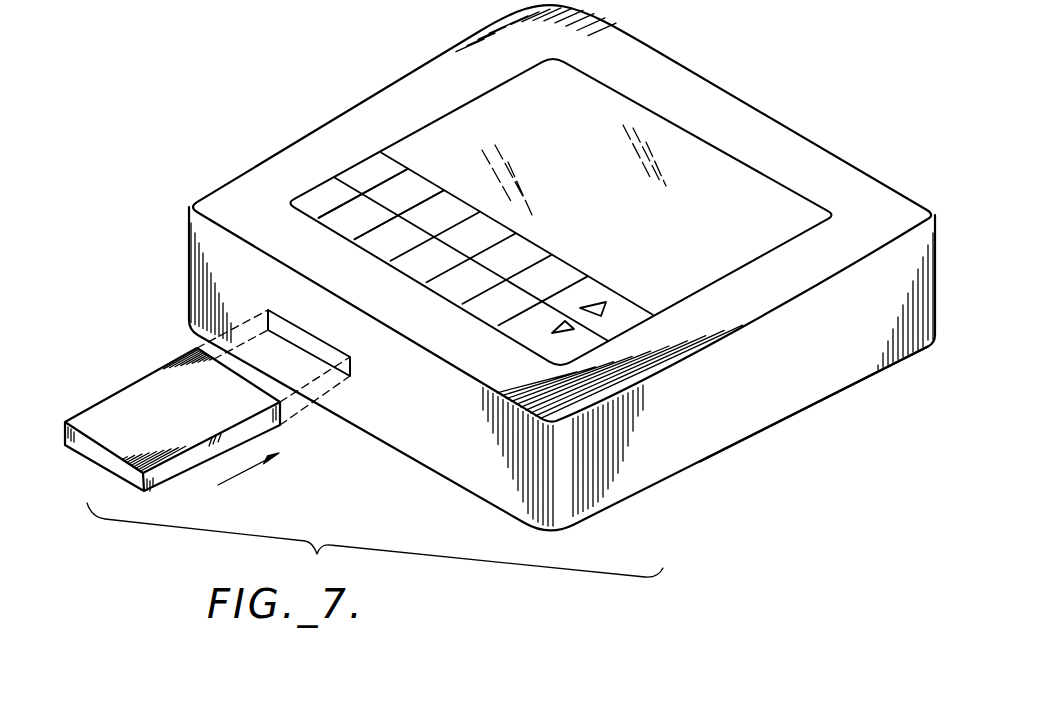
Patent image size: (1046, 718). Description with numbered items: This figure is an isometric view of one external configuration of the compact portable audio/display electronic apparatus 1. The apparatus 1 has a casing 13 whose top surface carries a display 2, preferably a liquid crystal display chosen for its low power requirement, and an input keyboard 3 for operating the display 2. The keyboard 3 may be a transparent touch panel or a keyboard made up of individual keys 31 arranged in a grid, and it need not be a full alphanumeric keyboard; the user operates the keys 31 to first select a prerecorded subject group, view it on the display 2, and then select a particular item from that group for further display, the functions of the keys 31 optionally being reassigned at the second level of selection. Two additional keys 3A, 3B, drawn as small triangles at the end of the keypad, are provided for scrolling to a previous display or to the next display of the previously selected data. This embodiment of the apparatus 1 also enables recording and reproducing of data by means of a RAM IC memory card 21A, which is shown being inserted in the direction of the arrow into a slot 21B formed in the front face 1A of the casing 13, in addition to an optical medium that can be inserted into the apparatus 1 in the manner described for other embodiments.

The compact portable audio/display electronic apparatus 1 is at (297, 92).
The front face 1A is at (447, 450).
The display 2 is at (690, 160).
The input keyboard 3 is at (320, 192).
The keys 31 is at (407, 268).
The key 3A is at (590, 290).
The key 3B is at (533, 325).
The casing 13 is at (808, 385).
The RAM IC memory card 21A is at (158, 388).
The slot 21B is at (351, 375).